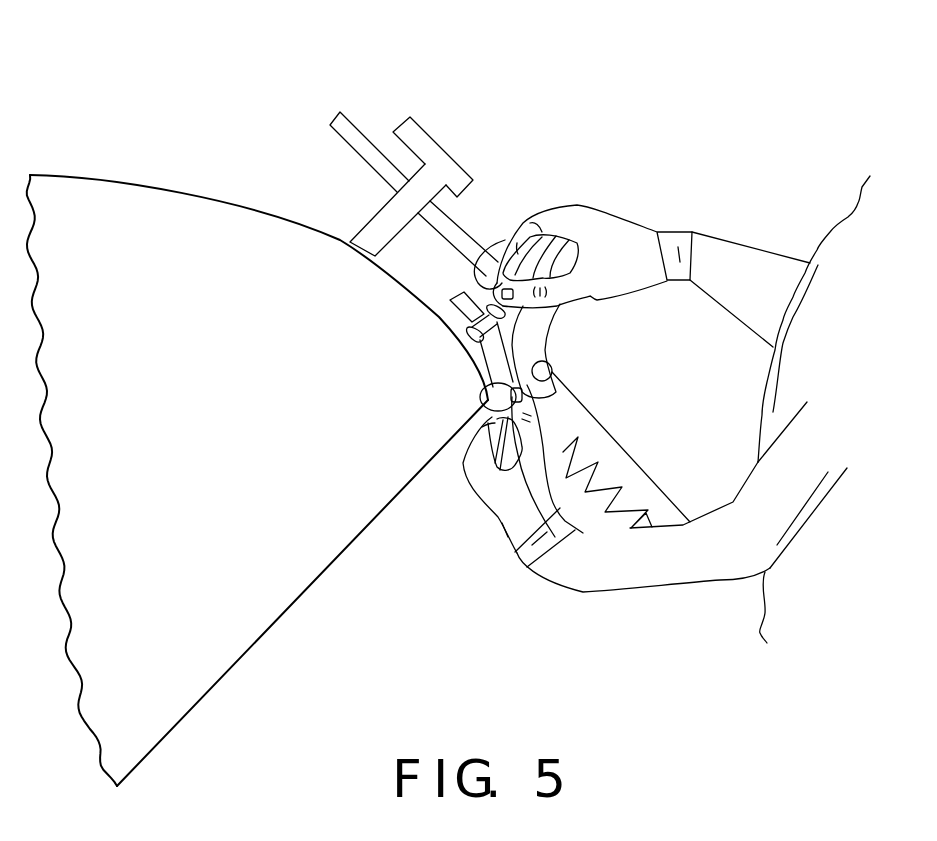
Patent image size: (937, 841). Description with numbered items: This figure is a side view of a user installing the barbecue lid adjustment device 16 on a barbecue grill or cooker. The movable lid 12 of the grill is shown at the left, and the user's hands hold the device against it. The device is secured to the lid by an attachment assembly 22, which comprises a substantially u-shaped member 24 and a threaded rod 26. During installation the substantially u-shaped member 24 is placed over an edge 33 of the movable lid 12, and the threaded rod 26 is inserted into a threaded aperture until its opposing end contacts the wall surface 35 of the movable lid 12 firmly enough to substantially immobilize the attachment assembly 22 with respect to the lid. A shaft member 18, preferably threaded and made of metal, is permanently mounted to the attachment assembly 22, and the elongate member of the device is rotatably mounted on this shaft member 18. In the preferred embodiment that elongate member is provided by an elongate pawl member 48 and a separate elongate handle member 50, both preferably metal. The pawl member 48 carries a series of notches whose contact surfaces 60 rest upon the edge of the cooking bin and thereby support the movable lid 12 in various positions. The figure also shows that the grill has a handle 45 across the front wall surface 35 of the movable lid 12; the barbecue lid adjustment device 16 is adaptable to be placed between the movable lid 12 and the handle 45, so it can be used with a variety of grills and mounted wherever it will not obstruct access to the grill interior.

The movable lid 12 is at (154, 452).
The wall surface 35 is at (325, 222).
The edge 33 is at (448, 443).
The elongate handle member 50 is at (360, 137).
The handle 45 is at (417, 137).
The attachment assembly 22 is at (447, 290).
The threaded rod 26 is at (482, 260).
The substantially u-shaped member 24 is at (545, 345).
The shaft member 18 is at (553, 368).
The barbecue lid adjustment device 16 is at (622, 385).
The elongate pawl member 48 is at (642, 487).
The contact surfaces 60 is at (555, 529).